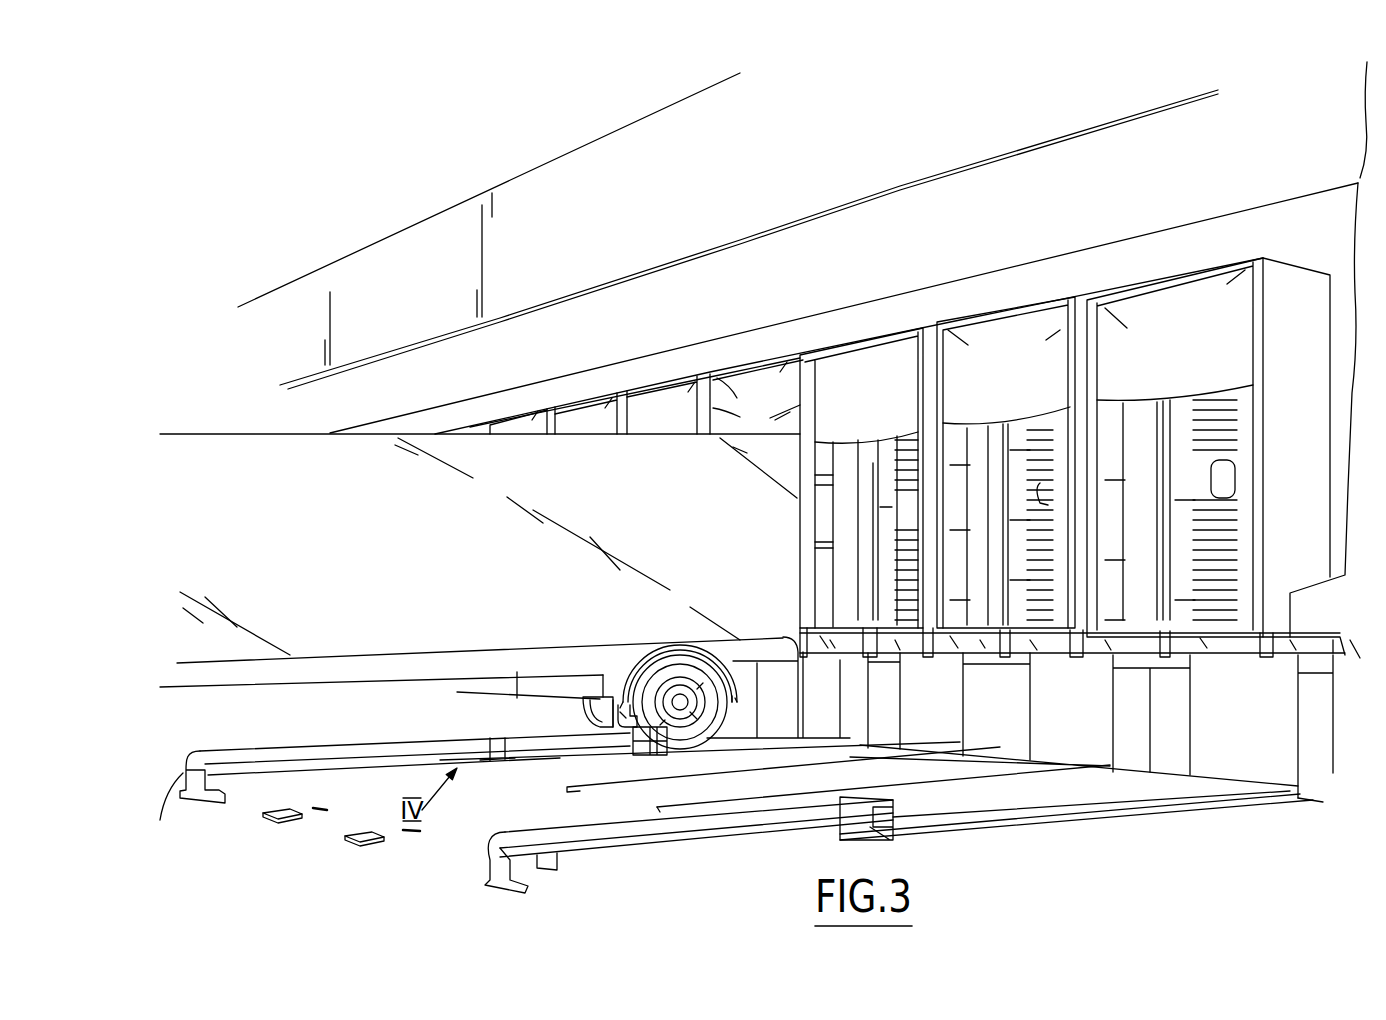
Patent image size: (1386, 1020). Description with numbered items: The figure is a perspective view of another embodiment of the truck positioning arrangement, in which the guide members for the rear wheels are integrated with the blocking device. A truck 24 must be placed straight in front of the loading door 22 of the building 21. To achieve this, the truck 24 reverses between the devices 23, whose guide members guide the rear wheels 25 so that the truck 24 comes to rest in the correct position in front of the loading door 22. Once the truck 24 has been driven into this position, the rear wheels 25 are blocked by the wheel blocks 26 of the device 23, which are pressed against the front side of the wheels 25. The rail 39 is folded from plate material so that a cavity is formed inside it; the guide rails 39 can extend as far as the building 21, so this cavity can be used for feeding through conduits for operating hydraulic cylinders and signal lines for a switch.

The building 21 is at (580, 197).
The loading door 22 is at (1007, 413).
The device 23 is at (562, 818).
The truck 24 is at (403, 588).
The rear wheel 25 is at (620, 700).
The wheel block 26 is at (613, 707).
The guide rail 39 is at (1003, 780).